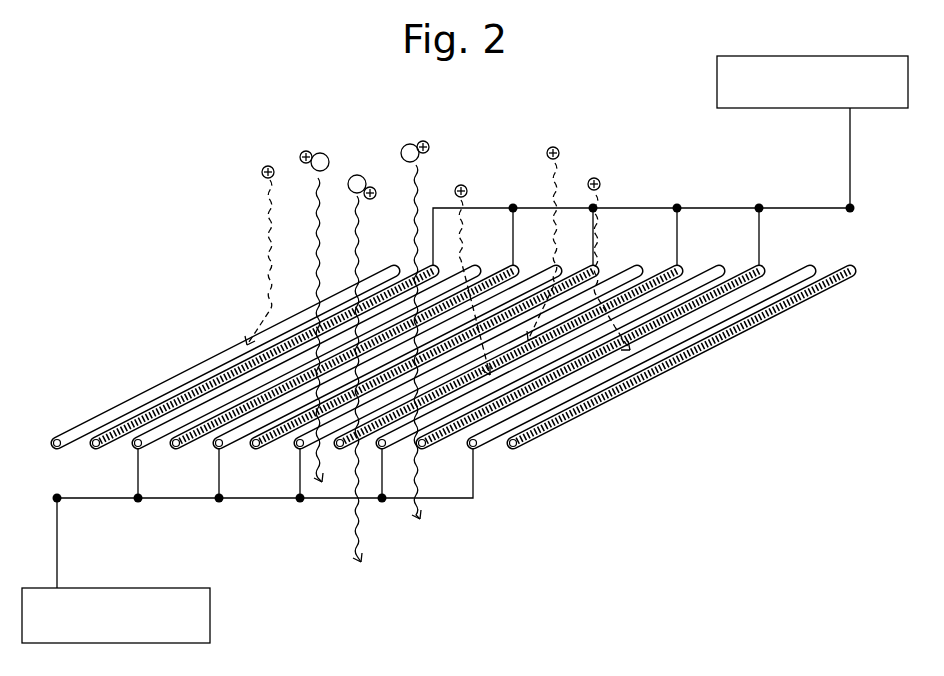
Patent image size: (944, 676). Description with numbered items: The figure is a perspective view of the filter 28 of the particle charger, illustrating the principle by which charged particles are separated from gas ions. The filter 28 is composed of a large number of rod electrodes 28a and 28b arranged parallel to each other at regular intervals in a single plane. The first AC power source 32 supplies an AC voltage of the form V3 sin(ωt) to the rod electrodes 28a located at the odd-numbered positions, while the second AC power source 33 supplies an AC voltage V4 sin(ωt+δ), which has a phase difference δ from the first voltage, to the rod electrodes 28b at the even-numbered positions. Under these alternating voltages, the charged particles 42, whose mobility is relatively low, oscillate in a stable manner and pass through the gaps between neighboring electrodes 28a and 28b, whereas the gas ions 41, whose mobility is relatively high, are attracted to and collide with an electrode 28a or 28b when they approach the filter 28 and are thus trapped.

The filter 28 is at (439, 348).
The rod electrodes 28a is at (78, 433).
The rod electrodes 28b is at (128, 427).
The first AC power source 32 is at (212, 619).
The second AC power source 33 is at (716, 80).
The gas ions 41 is at (270, 163).
The charged particles 42 is at (321, 150).